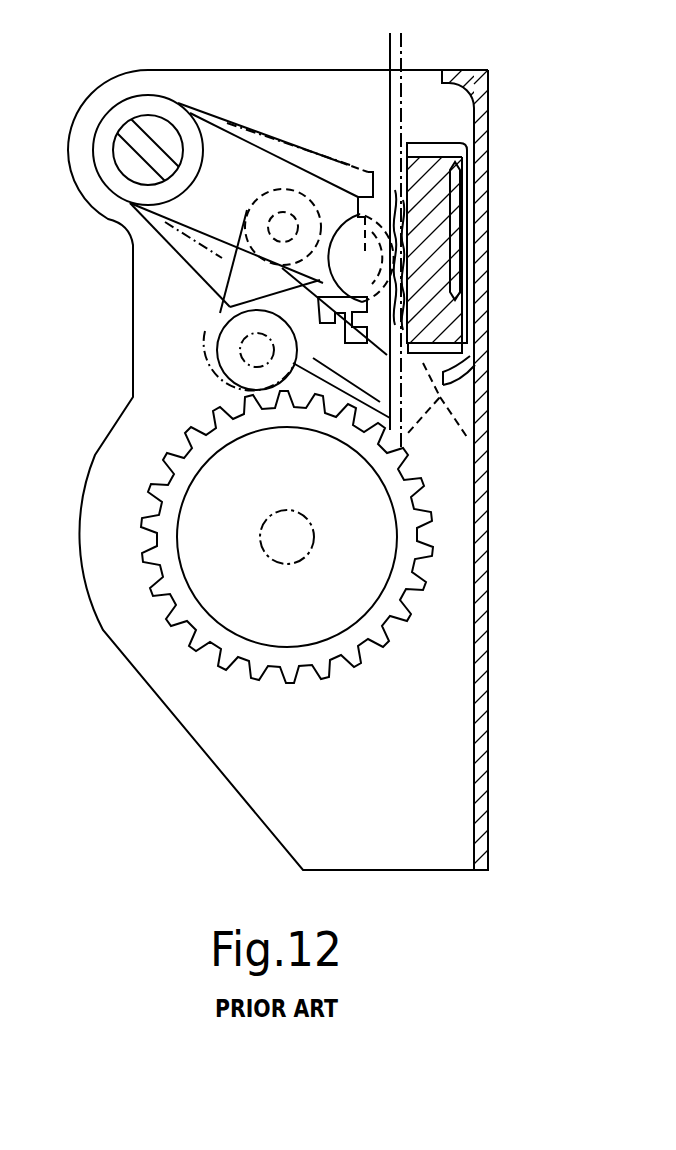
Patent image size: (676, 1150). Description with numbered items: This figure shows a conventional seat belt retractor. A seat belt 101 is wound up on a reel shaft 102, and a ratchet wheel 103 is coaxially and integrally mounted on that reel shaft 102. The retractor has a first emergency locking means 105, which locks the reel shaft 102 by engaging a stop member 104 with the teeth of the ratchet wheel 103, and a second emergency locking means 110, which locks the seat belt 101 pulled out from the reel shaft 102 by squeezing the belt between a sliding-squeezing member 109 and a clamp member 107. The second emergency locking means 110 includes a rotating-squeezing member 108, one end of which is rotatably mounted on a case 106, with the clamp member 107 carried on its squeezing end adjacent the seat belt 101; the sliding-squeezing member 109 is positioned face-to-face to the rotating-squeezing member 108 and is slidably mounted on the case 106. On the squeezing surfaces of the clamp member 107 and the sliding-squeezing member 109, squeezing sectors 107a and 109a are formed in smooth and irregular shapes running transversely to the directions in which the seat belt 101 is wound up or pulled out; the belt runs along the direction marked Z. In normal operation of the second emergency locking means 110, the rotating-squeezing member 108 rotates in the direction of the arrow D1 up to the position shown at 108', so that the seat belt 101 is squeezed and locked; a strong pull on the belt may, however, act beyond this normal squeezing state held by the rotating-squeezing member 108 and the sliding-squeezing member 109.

The seat belt 101 is at (398, 47).
The reel shaft 102 is at (263, 556).
The ratchet wheel 103 is at (167, 588).
The stop member 104 is at (462, 437).
The first emergency locking means 105 is at (430, 474).
The case 106 is at (205, 746).
The clamp member 107 is at (447, 283).
The squeezing sector 107a is at (378, 177).
The rotating-squeezing member 108 is at (230, 234).
The rotating-squeezing member (rotated position) 108' is at (290, 176).
The sliding-squeezing member 109 is at (460, 172).
The squeezing sector 109a is at (450, 228).
The second emergency locking means 110 is at (158, 255).
The direction Z is at (363, 44).
The arrow D1 is at (213, 160).